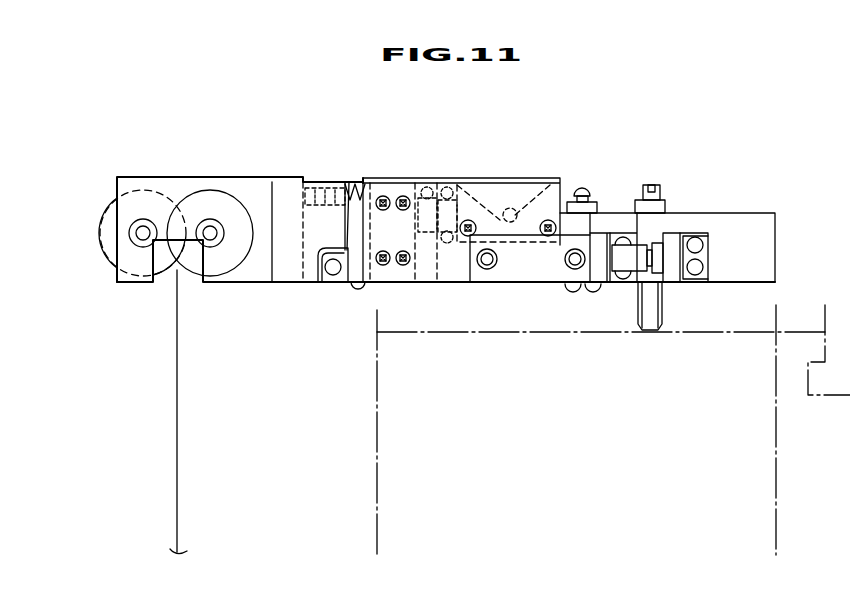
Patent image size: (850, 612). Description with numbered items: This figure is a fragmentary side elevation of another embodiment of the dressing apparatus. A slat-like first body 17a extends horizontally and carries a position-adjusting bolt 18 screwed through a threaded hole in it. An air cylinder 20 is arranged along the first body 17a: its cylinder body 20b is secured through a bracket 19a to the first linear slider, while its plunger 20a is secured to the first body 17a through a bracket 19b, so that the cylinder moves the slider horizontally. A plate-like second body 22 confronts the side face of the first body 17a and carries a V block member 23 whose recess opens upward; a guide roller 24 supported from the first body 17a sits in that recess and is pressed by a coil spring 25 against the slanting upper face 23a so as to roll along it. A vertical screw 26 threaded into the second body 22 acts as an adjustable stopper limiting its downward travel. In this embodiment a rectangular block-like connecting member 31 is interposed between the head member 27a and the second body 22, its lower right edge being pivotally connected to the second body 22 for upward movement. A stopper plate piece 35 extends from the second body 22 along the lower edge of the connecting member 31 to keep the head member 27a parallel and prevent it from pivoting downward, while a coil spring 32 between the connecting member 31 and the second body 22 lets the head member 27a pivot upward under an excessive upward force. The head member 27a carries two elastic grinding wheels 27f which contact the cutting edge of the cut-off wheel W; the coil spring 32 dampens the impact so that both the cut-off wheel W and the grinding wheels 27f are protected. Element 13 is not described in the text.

The frame 13 is at (372, 447).
The first body 17a is at (685, 211).
The bolt 18 is at (665, 299).
The bracket 19a is at (606, 284).
The bracket 19b is at (704, 251).
The air cylinder 20 is at (513, 290).
The plunger 20a is at (635, 300).
The cylinder body 20b is at (540, 284).
The second body 22 is at (400, 188).
The V block member 23 is at (462, 283).
The slanting upper face 23a is at (482, 200).
The guide roller 24 is at (521, 199).
The coil spring 25 is at (420, 270).
The screw 26 is at (587, 187).
The head member 27a is at (228, 187).
The grinding wheel 27f is at (108, 241).
The connecting member 31 is at (290, 268).
The coil spring 32 is at (352, 183).
The stopper plate piece 35 is at (337, 288).
The cut-off wheel W is at (173, 407).